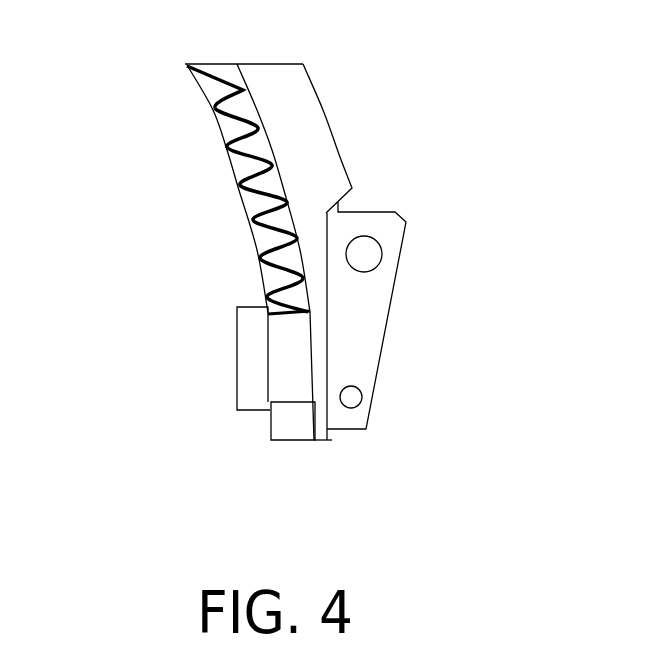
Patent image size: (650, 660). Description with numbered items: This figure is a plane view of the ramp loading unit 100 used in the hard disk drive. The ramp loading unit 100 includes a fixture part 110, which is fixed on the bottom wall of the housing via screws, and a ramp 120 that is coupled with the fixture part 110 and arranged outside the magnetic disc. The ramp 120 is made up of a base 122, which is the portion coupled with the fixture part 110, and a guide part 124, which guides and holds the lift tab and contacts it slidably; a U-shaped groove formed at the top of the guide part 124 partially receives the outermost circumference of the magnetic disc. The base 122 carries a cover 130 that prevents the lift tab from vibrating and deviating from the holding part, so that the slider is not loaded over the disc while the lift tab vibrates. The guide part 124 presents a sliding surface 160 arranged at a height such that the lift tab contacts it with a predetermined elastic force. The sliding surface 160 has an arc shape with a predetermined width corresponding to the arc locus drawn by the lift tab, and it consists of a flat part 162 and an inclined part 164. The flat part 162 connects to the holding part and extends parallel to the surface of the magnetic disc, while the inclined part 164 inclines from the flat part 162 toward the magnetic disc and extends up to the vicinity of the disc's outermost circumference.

The ramp loading unit 100 is at (372, 33).
The fixture part 110 is at (370, 325).
The ramp 120 is at (360, 182).
The base 122 is at (302, 59).
The guide part 124 is at (228, 59).
The cover 130 is at (287, 377).
The sliding surface 160 is at (117, 68).
The flat part 162 is at (227, 305).
The inclined part 164 is at (180, 68).